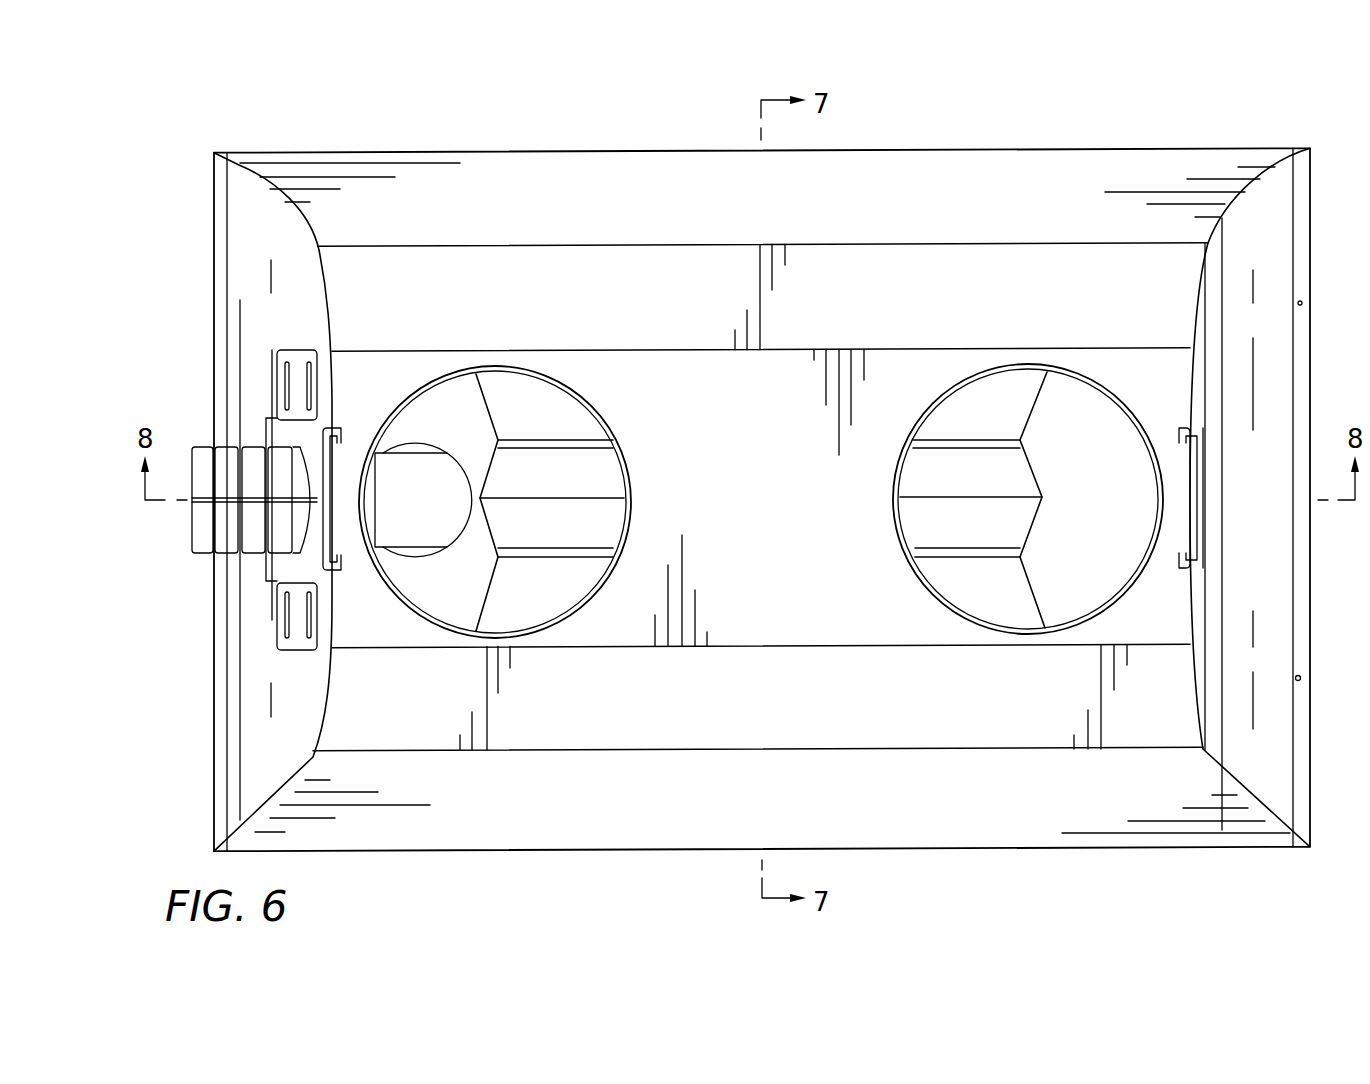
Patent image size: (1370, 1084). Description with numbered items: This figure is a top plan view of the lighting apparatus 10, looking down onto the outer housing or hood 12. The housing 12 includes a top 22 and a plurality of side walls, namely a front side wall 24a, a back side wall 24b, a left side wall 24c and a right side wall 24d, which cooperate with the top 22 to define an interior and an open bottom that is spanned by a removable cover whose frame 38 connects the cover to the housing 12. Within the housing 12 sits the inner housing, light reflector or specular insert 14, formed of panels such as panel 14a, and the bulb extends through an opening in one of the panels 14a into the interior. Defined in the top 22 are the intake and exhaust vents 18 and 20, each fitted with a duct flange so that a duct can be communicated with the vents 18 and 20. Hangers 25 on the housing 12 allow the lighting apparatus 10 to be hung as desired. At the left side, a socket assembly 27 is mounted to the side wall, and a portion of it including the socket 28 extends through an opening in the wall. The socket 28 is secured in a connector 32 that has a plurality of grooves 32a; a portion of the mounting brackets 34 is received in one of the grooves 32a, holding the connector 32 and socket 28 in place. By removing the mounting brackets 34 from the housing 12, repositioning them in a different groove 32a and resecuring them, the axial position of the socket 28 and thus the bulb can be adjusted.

The lighting apparatus 10 is at (503, 137).
The outer housing 12 is at (903, 182).
The inner housing 14 is at (1108, 506).
The panel 14a is at (416, 551).
The intake vent 18 is at (990, 407).
The exhaust vent 20 is at (530, 407).
The top 22 is at (770, 506).
The front side wall 24a is at (787, 708).
The back side wall 24b is at (648, 209).
The left side wall 24c is at (290, 242).
The right side wall 24d is at (1277, 240).
The hanger 25 is at (1200, 553).
The socket assembly 27 is at (192, 411).
The socket 28 is at (433, 506).
The connector 32 is at (203, 545).
The groove 32a is at (240, 560).
The mounting bracket 34 is at (285, 652).
The frame 38 is at (1303, 680).